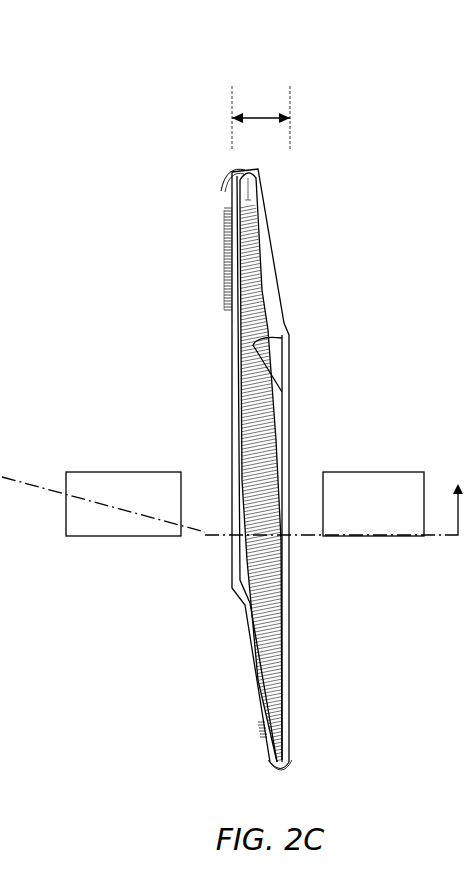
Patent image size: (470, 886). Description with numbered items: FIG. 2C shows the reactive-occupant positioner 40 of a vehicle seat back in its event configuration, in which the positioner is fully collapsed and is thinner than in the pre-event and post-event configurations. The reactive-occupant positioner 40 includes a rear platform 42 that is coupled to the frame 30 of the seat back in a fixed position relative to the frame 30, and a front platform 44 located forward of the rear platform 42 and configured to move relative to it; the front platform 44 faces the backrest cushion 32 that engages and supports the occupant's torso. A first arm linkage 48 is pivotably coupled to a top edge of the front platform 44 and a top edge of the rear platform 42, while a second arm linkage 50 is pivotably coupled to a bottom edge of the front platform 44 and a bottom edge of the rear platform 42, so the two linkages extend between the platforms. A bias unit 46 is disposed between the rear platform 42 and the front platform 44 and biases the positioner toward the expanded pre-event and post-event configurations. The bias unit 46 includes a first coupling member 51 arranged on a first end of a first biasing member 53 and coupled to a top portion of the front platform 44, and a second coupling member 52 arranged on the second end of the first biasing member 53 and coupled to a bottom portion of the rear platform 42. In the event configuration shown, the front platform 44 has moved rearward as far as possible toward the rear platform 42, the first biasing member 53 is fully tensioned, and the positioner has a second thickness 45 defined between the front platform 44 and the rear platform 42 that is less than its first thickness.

The frame 30 is at (372, 471).
The backrest cushion 32 is at (124, 471).
The reactive-occupant positioner 40 is at (191, 130).
The rear platform 42 is at (295, 630).
The front platform 44 is at (233, 426).
The second thickness 45 is at (262, 113).
The bias unit 46 is at (268, 575).
The first arm linkage 48 is at (279, 241).
The second arm linkage 50 is at (249, 670).
The first coupling member 51 is at (220, 171).
The second coupling member 52 is at (297, 757).
The first biasing member 53 is at (248, 550).